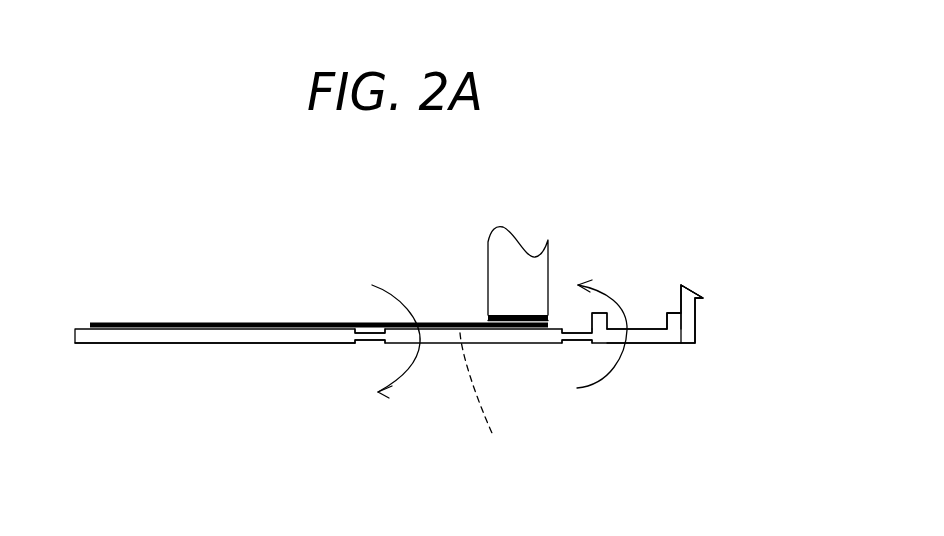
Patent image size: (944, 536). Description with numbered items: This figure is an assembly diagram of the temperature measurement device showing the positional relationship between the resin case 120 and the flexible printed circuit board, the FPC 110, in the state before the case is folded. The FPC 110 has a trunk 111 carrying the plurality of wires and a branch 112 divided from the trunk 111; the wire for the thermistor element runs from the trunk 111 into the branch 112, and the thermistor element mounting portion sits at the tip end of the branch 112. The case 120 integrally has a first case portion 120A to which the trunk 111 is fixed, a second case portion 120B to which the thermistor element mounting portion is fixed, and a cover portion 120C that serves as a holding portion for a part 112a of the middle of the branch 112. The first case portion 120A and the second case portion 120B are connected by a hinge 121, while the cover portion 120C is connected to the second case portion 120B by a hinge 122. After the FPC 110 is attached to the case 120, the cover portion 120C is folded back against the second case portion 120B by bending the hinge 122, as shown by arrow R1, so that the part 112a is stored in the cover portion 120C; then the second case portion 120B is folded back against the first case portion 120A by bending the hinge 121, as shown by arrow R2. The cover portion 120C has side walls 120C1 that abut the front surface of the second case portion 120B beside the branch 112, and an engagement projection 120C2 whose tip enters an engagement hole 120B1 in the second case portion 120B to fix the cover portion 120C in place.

The flexible printed circuit board 110 is at (340, 240).
The trunk 111 is at (128, 322).
The branch 112 is at (290, 322).
The part of the middle of the branch 112a is at (512, 315).
The case 120 is at (232, 358).
The first case portion 120A is at (161, 335).
The second case portion 120B is at (516, 335).
The engagement hole 120B1 is at (499, 403).
The cover portion 120C is at (652, 343).
The side walls 120C1 is at (672, 322).
The engagement projection 120C2 is at (688, 324).
The hinge 121 is at (372, 341).
The hinge 122 is at (577, 343).
The arrow R1 is at (602, 319).
The arrow R2 is at (396, 355).